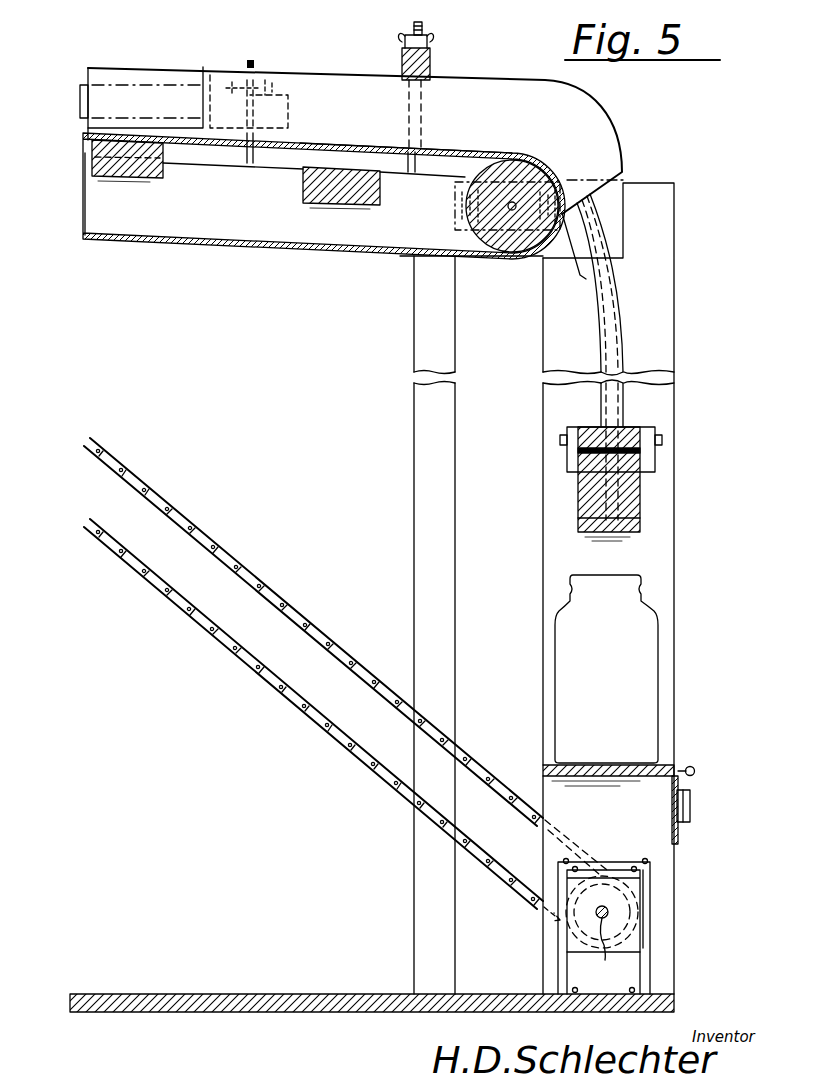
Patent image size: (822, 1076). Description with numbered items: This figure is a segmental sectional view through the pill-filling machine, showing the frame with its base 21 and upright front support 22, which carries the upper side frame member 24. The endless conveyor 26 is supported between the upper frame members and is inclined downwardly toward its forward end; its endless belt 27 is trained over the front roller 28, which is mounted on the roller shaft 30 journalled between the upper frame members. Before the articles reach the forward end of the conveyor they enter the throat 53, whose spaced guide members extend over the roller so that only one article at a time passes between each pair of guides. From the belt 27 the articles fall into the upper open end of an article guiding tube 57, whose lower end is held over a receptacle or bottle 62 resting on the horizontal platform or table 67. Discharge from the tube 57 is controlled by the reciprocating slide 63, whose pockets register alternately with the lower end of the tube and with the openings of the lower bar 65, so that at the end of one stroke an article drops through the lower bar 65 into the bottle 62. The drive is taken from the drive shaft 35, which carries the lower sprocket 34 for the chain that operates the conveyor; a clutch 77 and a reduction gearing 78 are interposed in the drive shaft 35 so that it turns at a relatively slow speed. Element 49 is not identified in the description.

The base 21 is at (233, 1012).
The upright front support 22 is at (425, 500).
The upper side frame member 24 is at (221, 228).
The endless conveyor 26 is at (349, 265).
The endless belt 27 is at (470, 148).
The front roller 28 is at (468, 232).
The roller shaft 30 is at (506, 212).
The lower sprocket 34 is at (545, 914).
The drive shaft 35 is at (599, 951).
The clamp device 49 is at (235, 78).
The throat 53 is at (341, 95).
The article guiding tube 57 is at (614, 313).
The receptacle or bottle 62 is at (642, 657).
The reciprocating slide 63 is at (640, 470).
The lower bar 65 is at (578, 509).
The horizontal platform or table 67 is at (668, 766).
The clutch 77 is at (634, 935).
The reduction gearing 78 is at (652, 970).